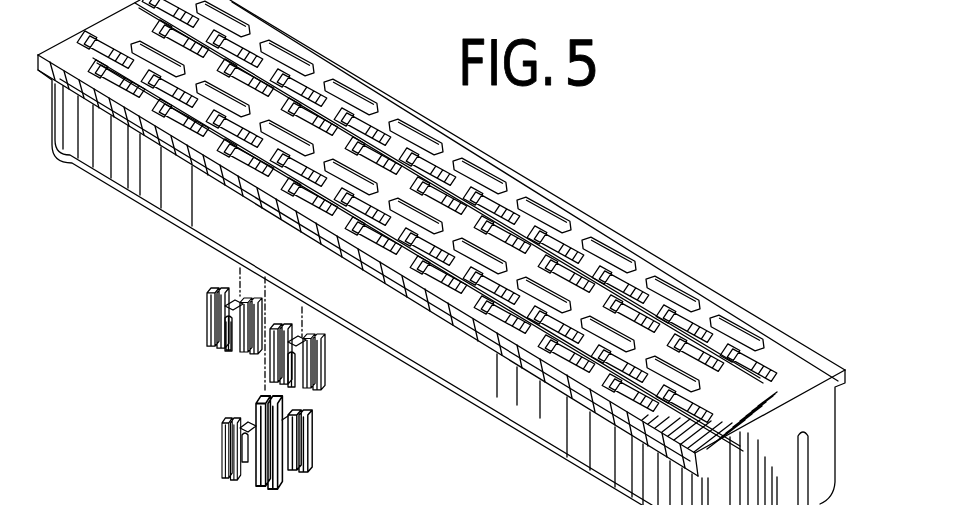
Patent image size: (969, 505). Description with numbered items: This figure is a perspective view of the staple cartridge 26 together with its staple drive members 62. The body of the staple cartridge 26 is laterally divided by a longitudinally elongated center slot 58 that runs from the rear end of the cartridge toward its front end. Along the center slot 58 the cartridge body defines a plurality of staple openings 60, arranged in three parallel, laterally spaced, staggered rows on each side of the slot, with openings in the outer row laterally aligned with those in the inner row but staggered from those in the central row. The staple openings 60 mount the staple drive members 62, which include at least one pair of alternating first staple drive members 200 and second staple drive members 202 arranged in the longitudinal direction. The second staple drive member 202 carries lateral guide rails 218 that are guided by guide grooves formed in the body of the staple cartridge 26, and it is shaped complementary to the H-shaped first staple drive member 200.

The staple cartridge 26 is at (805, 370).
The center slot 58 is at (537, 270).
The staple openings 60 is at (603, 255).
The staple drive members 62 is at (275, 372).
The first staple drive member 200 is at (313, 453).
The second staple drive member 202 is at (208, 296).
The lateral guide rails 218 is at (230, 354).